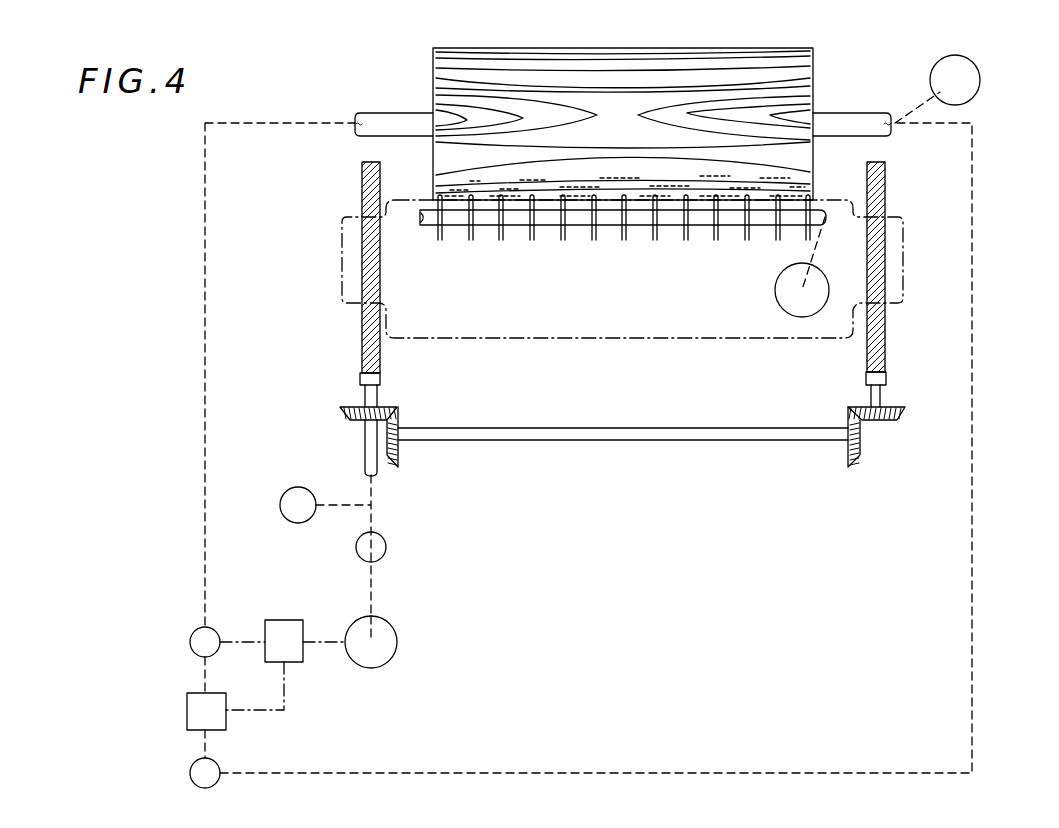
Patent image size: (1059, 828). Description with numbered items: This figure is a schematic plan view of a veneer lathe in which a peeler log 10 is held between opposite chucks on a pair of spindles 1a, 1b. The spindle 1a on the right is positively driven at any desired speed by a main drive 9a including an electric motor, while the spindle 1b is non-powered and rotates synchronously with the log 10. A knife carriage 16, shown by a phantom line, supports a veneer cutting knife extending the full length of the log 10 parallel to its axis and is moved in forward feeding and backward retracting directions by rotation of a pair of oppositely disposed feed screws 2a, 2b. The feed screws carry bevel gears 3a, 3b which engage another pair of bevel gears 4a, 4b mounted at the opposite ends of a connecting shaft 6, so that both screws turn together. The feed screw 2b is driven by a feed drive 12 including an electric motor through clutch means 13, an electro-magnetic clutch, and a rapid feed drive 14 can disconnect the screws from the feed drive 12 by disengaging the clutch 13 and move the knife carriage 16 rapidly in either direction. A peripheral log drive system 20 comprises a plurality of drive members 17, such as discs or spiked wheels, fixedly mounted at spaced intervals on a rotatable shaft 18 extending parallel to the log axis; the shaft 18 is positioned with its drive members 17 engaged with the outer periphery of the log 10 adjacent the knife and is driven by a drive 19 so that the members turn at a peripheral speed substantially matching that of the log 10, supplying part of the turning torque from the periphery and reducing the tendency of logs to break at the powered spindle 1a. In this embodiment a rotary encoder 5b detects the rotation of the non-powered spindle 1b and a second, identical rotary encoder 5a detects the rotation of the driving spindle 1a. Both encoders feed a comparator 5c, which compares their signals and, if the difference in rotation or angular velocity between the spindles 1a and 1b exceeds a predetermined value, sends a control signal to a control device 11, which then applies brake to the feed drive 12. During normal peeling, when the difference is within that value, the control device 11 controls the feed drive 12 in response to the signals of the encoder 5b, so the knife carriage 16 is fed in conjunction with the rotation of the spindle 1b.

The log 10 is at (433, 52).
The spindle 1a is at (845, 118).
The spindle 1b is at (378, 120).
The main drive 9a is at (980, 85).
The feed screw 2a is at (885, 328).
The feed screw 2b is at (362, 332).
The knife carriage 16 is at (489, 338).
The drive members 17 is at (441, 238).
The rotatable shaft 18 is at (700, 218).
The drive 19 is at (777, 297).
The peripheral log drive system 20 is at (623, 261).
The bevel gear 3a is at (905, 410).
The bevel gear 3b is at (340, 410).
The bevel gear 4a is at (848, 452).
The bevel gear 4b is at (398, 452).
The connecting shaft 6 is at (652, 440).
The rapid feed drive 14 is at (290, 498).
The clutch means 13 is at (386, 545).
The feed drive 12 is at (394, 640).
The control device 11 is at (284, 625).
The rotary encoder 5a is at (195, 767).
The rotary encoder 5b is at (195, 630).
The comparator 5c is at (195, 710).